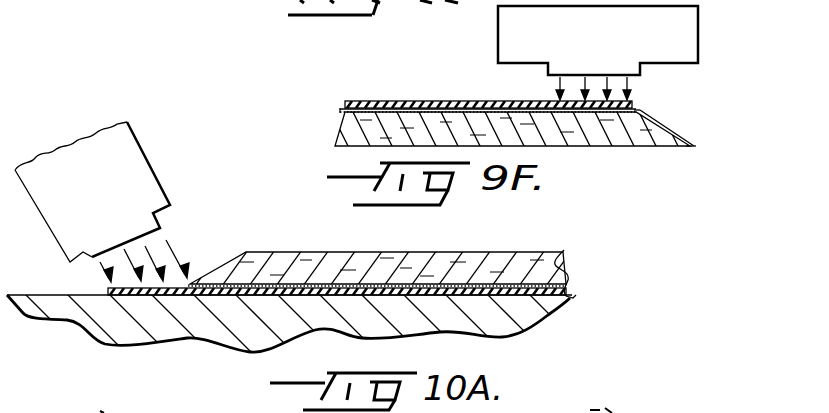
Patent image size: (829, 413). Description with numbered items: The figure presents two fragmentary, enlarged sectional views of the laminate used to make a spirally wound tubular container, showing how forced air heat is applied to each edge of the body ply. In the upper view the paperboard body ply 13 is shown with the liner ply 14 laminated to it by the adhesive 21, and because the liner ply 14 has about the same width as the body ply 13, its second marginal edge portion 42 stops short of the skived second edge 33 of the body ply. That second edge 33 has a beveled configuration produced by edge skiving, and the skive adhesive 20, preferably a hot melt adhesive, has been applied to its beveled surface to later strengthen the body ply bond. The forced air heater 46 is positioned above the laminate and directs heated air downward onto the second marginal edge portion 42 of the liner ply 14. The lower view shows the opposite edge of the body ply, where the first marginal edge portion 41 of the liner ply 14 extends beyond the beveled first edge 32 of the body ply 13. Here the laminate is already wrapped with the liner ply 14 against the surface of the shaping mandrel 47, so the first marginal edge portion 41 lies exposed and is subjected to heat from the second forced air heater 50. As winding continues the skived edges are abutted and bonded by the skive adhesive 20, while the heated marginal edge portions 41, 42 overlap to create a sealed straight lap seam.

In FIG. 9F, the body ply 13 is at (450, 116).
In FIG. 10A, the body ply 13 is at (316, 268).
In FIG. 9F, the liner ply 14 is at (379, 107).
In FIG. 10A, the liner ply 14 is at (211, 296).
In FIG. 9F, the skive adhesive 20 is at (660, 120).
In FIG. 9F, the adhesive 21 is at (357, 133).
In FIG. 10A, the adhesive 21 is at (556, 266).
In FIG. 10A, the first edge 32 is at (218, 283).
In FIG. 9F, the second edge 33 is at (682, 141).
In FIG. 10A, the first marginal edge portion 41 is at (100, 288).
In FIG. 9F, the second marginal edge portion 42 is at (633, 103).
In FIG. 9F, the forced air heater 46 is at (499, 38).
In FIG. 10A, the shaping mandrel 47 is at (273, 345).
In FIG. 10A, the second forced air heater 50 is at (128, 142).